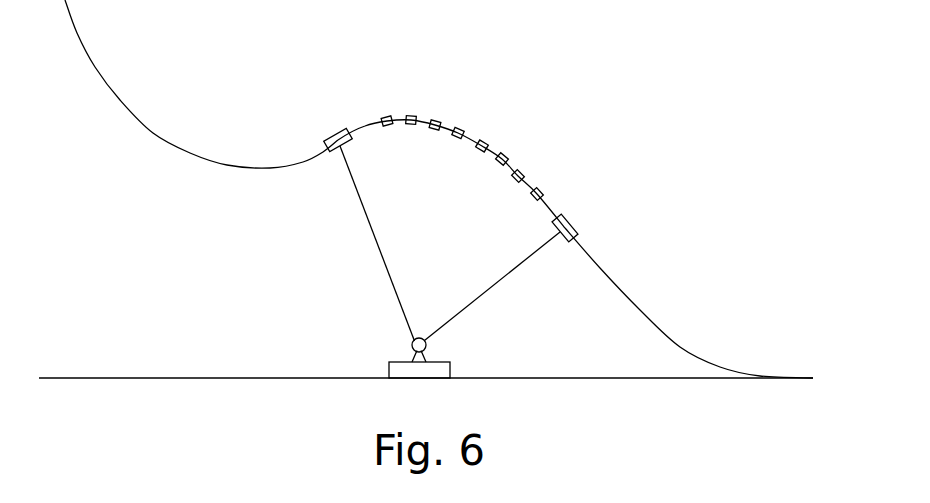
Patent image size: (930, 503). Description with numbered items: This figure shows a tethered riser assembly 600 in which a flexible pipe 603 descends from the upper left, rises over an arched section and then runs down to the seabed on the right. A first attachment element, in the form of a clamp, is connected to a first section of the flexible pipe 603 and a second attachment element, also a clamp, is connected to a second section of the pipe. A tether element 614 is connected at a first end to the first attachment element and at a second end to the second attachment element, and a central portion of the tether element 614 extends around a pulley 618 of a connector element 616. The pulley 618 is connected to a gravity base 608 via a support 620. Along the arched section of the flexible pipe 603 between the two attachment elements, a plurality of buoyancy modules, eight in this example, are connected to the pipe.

The tethered riser assembly 600 is at (559, 96).
The flexible pipe 603 is at (612, 280).
The gravity base 608 is at (451, 373).
The tether element 614 is at (505, 282).
The connector element 616 is at (396, 347).
The pulley 618 is at (416, 338).
The support 620 is at (428, 351).